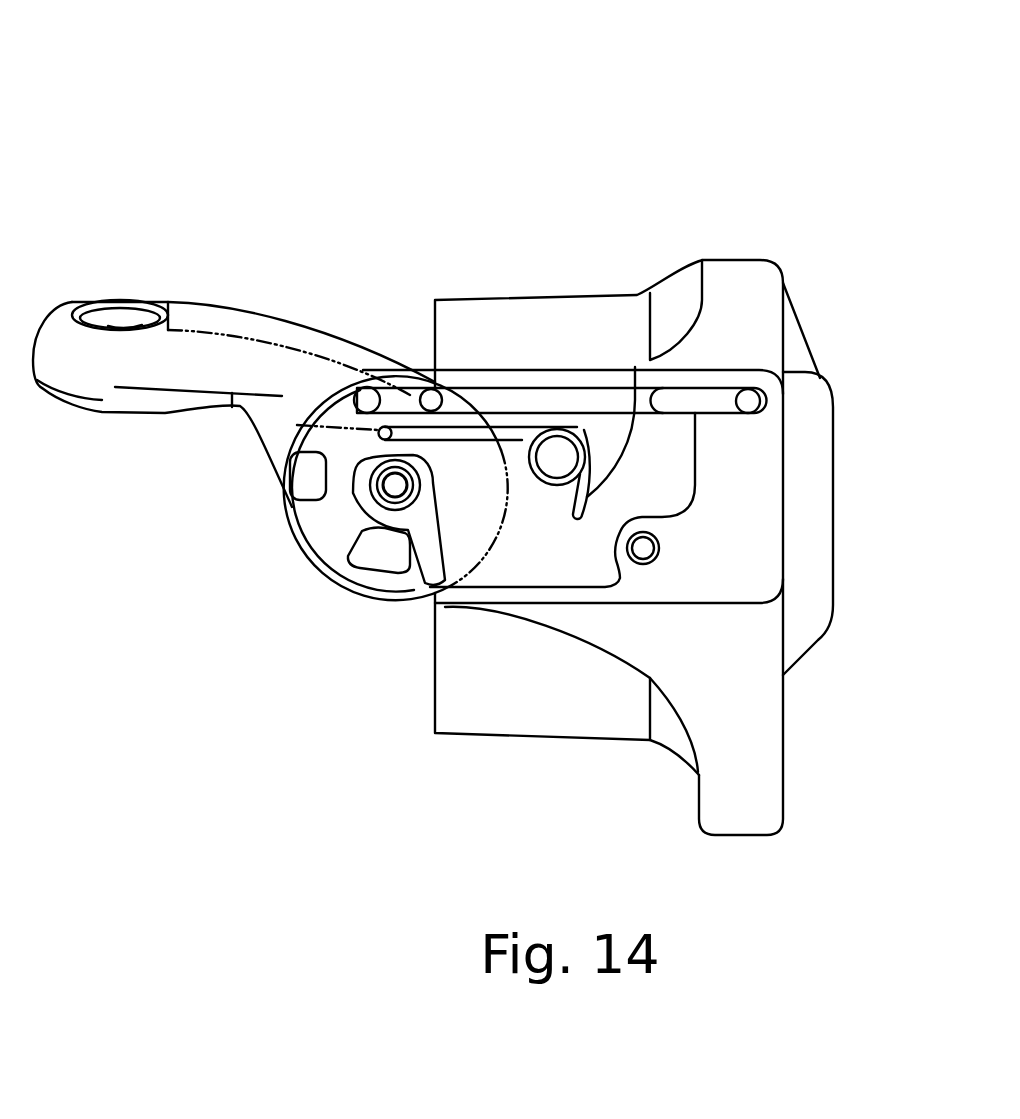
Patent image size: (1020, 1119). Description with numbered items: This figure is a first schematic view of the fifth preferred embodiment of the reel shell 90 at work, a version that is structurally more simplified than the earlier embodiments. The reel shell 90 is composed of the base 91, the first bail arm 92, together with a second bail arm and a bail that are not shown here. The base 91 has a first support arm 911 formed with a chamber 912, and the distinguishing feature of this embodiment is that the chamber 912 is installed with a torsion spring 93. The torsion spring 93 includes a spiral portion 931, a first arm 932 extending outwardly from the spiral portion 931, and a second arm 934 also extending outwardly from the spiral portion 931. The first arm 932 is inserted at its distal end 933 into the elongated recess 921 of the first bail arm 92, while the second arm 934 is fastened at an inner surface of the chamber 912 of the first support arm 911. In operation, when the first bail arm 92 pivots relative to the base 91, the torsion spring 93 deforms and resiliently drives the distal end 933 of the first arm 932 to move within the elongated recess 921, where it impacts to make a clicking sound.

The reel shell 90 is at (192, 80).
The base 91 is at (540, 687).
The first support arm 911 is at (580, 615).
The chamber 912 is at (665, 463).
The first bail arm 92 is at (68, 357).
The elongated recess 921 is at (402, 427).
The torsion spring 93 is at (635, 178).
The spiral portion 931 is at (583, 427).
The first arm 932 is at (450, 430).
The distal end 933 is at (370, 460).
The second arm 934 is at (635, 367).